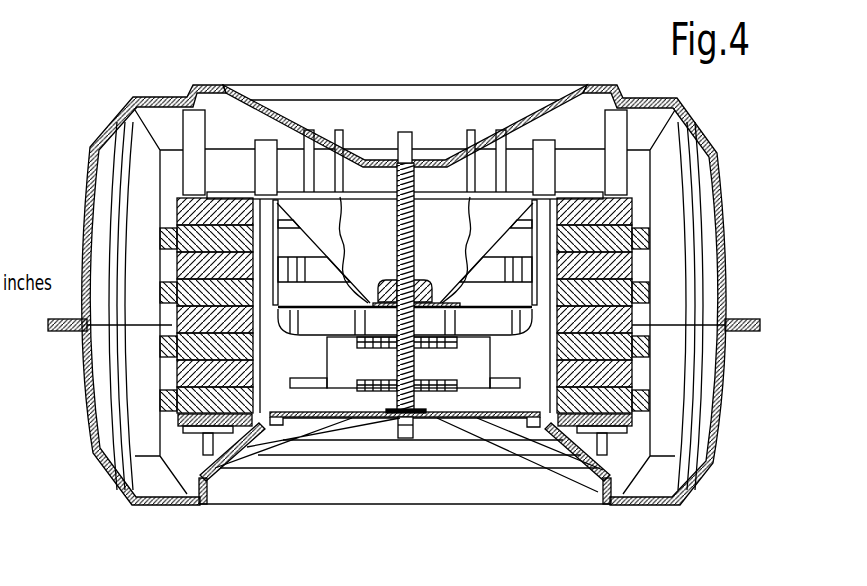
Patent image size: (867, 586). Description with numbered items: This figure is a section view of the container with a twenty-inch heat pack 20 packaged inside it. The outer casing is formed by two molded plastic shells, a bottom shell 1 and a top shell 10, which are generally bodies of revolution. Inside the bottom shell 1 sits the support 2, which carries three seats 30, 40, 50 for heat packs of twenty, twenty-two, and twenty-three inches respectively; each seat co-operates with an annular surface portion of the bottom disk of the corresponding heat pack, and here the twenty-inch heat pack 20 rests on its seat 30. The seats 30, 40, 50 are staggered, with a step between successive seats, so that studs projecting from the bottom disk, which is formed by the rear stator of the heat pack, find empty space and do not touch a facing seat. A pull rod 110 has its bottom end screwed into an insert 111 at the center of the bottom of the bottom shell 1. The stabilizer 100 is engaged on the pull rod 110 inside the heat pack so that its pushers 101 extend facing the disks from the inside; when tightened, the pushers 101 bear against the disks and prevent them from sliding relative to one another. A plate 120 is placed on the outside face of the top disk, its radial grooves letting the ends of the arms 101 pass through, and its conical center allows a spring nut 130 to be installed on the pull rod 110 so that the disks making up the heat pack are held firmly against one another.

The bottom shell 1 is at (75, 438).
The support 2 is at (517, 432).
The top shell 10 is at (78, 121).
The stator 20 is at (165, 212).
The seat 30 is at (269, 442).
The seat 40 is at (250, 459).
The seat 50 is at (226, 473).
The stabilizer 100 is at (482, 403).
The pushers 101 is at (266, 147).
The pull rod 110 is at (406, 140).
The insert 111 is at (407, 440).
The plate 120 is at (433, 178).
The spring nut 130 is at (380, 280).